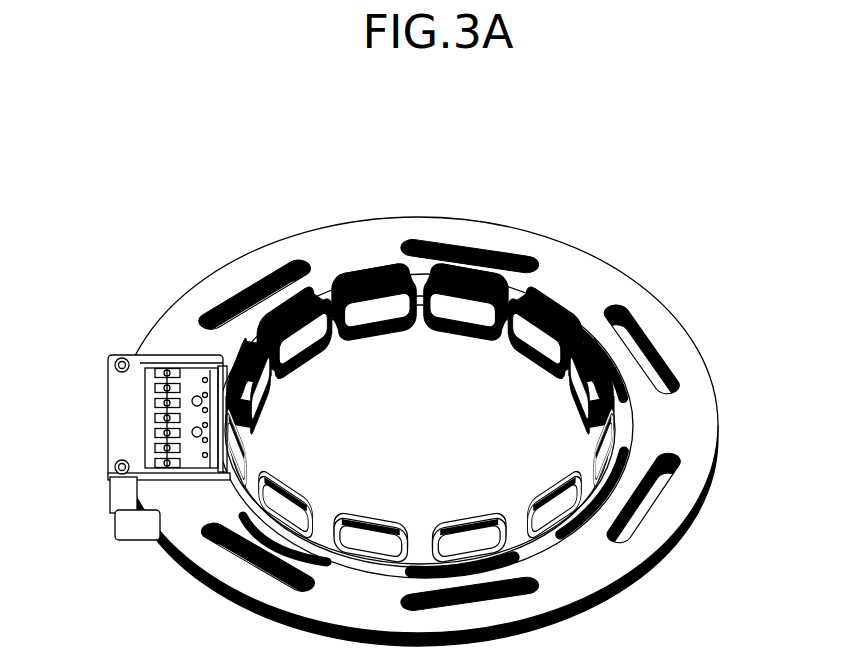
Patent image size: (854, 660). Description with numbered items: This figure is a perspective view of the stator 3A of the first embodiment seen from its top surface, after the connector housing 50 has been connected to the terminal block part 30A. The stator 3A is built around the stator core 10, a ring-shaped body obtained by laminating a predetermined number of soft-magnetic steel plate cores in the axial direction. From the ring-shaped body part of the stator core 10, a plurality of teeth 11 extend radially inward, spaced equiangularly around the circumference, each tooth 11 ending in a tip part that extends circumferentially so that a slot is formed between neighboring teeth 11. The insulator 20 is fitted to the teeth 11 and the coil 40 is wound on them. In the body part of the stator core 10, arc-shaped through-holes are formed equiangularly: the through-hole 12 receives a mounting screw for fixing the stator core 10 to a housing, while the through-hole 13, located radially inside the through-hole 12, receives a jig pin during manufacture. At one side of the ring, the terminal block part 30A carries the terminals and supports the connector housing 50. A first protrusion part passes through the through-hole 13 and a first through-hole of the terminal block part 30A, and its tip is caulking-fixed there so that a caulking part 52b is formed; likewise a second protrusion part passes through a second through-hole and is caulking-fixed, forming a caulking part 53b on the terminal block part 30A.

The stator 3A is at (399, 370).
The stator core 10 is at (444, 424).
The teeth 11 is at (514, 343).
The through-hole 12 is at (252, 290).
The through-hole 13 is at (617, 353).
The insulator 20 is at (456, 303).
The coil 40 is at (372, 283).
The terminal block part 30A is at (128, 507).
The connector housing 50 is at (141, 545).
The caulking part 52b is at (196, 437).
The caulking part 53b is at (121, 462).